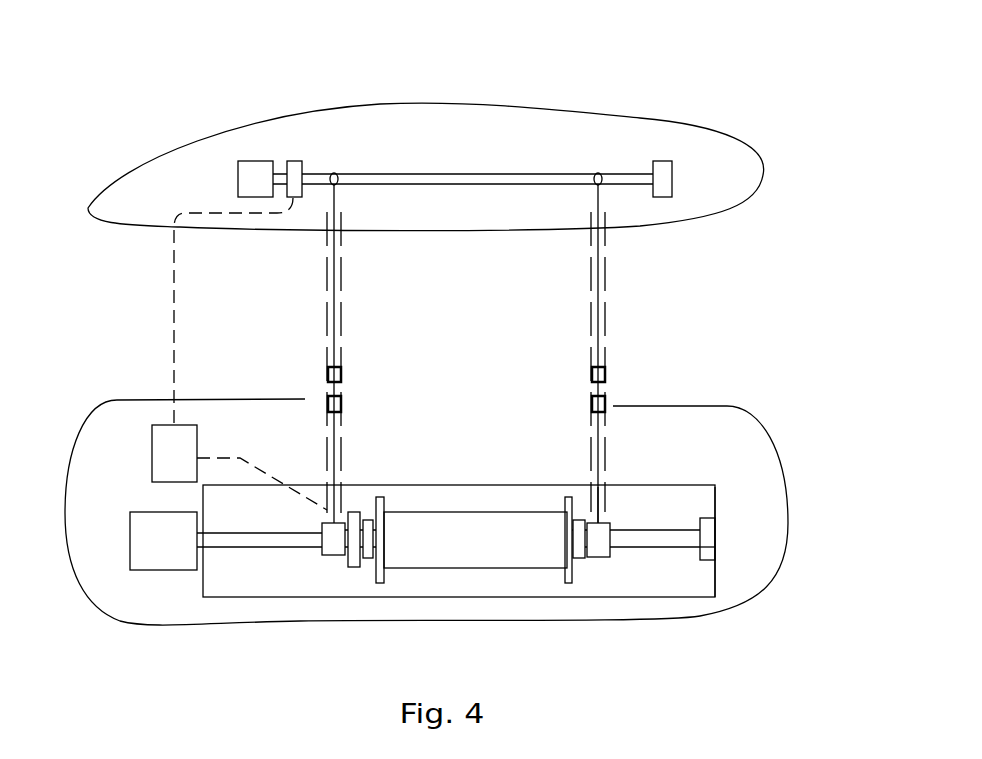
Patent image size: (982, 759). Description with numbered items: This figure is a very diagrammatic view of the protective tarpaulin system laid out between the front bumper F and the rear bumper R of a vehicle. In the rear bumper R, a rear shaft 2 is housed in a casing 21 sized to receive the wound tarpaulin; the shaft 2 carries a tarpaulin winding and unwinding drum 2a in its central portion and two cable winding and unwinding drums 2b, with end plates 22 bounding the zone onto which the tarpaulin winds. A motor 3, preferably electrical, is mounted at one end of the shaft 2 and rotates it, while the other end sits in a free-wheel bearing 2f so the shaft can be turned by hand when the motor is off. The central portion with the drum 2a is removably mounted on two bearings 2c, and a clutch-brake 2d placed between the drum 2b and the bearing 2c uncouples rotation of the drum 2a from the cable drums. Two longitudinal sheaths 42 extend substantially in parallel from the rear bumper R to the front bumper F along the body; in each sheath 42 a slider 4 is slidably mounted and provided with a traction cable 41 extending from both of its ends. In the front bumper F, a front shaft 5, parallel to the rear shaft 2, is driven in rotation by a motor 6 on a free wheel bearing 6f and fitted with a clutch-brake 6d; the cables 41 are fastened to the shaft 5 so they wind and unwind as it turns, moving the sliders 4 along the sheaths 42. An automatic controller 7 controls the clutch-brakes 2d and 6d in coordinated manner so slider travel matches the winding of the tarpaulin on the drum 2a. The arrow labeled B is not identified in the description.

The front bumper F is at (132, 173).
The rear bumper R is at (90, 567).
The drive assembly B is at (730, 375).
The rear shaft 2 is at (662, 532).
The tarpaulin winding and unwinding drum 2a is at (495, 553).
The cable winding and unwinding drums 2b is at (327, 547).
The bearings 2c is at (380, 585).
The clutch-brake 2d is at (350, 560).
The free-wheel bearing 2f is at (712, 537).
The casing 21 is at (717, 562).
The end plates 22 is at (603, 500).
The motor 3 is at (158, 553).
The slider 4 is at (328, 392).
The traction cable 41 is at (334, 318).
The longitudinal sheath 42 is at (327, 263).
The front shaft 5 is at (640, 175).
The motor 6 is at (257, 161).
The clutch-brake 6d is at (297, 161).
The free wheel bearing 6f is at (663, 163).
The automatic controller 7 is at (165, 442).